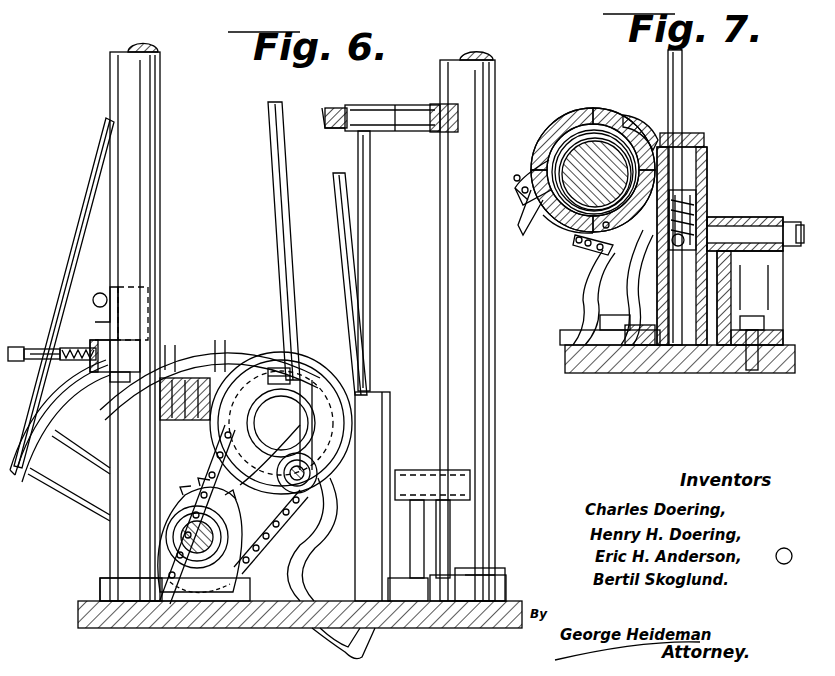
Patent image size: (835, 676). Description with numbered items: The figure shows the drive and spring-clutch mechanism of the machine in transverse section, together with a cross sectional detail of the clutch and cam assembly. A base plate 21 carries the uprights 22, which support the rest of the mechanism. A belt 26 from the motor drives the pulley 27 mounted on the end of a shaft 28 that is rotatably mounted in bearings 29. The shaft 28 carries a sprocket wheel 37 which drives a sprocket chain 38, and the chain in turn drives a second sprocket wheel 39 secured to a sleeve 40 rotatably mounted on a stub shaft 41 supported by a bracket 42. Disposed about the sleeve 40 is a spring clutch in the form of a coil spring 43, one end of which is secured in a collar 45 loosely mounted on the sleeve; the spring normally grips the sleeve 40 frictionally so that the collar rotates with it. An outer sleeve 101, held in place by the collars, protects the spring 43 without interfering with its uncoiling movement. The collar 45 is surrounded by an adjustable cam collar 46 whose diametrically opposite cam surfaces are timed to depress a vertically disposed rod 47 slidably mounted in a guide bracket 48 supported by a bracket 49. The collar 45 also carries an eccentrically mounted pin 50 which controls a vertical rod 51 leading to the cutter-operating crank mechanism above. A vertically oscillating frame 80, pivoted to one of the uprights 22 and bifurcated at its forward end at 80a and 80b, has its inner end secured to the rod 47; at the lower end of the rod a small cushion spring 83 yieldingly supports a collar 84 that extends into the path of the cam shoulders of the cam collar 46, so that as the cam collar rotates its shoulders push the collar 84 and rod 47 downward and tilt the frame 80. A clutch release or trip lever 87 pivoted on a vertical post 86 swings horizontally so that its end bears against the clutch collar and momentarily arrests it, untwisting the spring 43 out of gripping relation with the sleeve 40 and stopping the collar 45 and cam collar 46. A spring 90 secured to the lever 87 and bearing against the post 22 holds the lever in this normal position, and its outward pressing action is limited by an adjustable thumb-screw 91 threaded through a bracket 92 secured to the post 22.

In FIG. 6, the base plate 21 is at (78, 613).
In FIG. 7, the base plate 21 is at (565, 361).
In FIG. 6, the uprights 22 is at (138, 50).
In FIG. 6, the belt 26 is at (340, 204).
In FIG. 6, the pulley 27 is at (60, 440).
In FIG. 6, the shaft 28 is at (180, 534).
In FIG. 6, the bearings 29 is at (170, 546).
In FIG. 6, the sprocket wheel 37 is at (175, 509).
In FIG. 6, the sprocket chain 38 is at (190, 459).
In FIG. 7, the sprocket chain 38 is at (522, 213).
In FIG. 6, the sprocket wheel 39 is at (238, 350).
In FIG. 6, the sleeve 40 is at (262, 440).
In FIG. 7, the sleeve 40 is at (578, 112).
In FIG. 6, the stub shaft 41 is at (270, 392).
In FIG. 7, the stub shaft 41 is at (568, 212).
In FIG. 6, the bracket 42 is at (307, 542).
In FIG. 7, the coil spring 43 is at (612, 140).
In FIG. 6, the collar 45 is at (292, 374).
In FIG. 7, the collar 45 is at (552, 132).
In FIG. 6, the cam collar 46 is at (318, 378).
In FIG. 7, the cam collar 46 is at (645, 125).
In FIG. 6, the rod 47 is at (358, 161).
In FIG. 7, the rod 47 is at (684, 71).
In FIG. 6, the guide bracket 48 is at (398, 412).
In FIG. 7, the guide bracket 48 is at (707, 163).
In FIG. 6, the bracket 49 is at (422, 490).
In FIG. 7, the bracket 49 is at (716, 295).
In FIG. 6, the pin 50 is at (310, 465).
In FIG. 6, the rod 51 is at (278, 267).
In FIG. 6, the frame 80 is at (414, 98).
In FIG. 6, the bifurcation 80a is at (330, 128).
In FIG. 6, the bifurcation 80b is at (444, 133).
In FIG. 7, the cushion spring 83 is at (697, 206).
In FIG. 7, the collar 84 is at (702, 149).
In FIG. 6, the post 86 is at (138, 288).
In FIG. 6, the trip lever 87 is at (90, 340).
In FIG. 6, the spring 90 is at (110, 379).
In FIG. 6, the thumb-screw 91 is at (34, 341).
In FIG. 6, the bracket 92 is at (72, 323).
In FIG. 7, the sleeve 101 is at (550, 149).